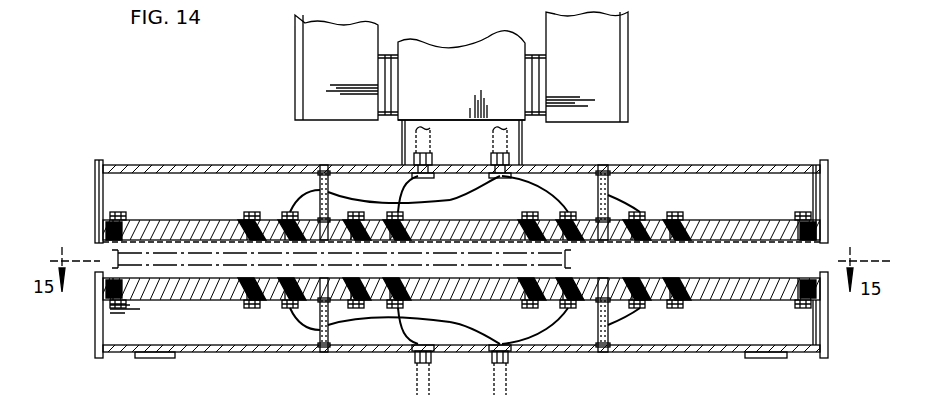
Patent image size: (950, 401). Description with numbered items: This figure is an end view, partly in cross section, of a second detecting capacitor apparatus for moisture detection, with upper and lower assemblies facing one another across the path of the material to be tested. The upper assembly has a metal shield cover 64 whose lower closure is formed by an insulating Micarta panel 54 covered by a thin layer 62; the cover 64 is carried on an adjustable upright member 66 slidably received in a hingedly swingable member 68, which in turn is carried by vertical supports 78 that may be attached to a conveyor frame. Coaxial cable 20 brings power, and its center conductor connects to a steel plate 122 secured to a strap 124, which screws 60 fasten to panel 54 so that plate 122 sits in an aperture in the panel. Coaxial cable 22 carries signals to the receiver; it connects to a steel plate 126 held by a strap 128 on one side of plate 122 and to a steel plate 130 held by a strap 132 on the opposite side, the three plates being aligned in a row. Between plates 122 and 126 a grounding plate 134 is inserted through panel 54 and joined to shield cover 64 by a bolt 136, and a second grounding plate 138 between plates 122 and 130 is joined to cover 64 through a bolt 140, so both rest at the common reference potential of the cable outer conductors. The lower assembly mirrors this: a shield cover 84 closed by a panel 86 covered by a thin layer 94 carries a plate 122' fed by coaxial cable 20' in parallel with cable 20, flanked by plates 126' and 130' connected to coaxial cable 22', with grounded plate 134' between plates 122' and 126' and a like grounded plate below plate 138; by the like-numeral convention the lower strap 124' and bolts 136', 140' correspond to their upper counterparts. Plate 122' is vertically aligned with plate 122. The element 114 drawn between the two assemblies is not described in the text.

The coaxial cable 20 is at (435, 152).
The coaxial cable 22 is at (484, 152).
The coaxial cable 20' is at (446, 370).
The coaxial cable 22' is at (521, 370).
The panel 54 is at (548, 225).
The screws 60 is at (130, 207).
The layer 62 is at (108, 248).
The shield cover 64 is at (674, 164).
The upright member 66 is at (402, 146).
The hingedly swingable member 68 is at (428, 50).
The vertical supports 78 is at (628, 48).
The shield cover 84 is at (712, 354).
The panel 86 is at (645, 290).
The layer 94 is at (726, 278).
The shaft 114 is at (572, 258).
The plate 122 is at (509, 202).
The strap 124 is at (408, 201).
The plate 126 is at (461, 214).
The strap 128 is at (200, 222).
The plate 130 is at (750, 211).
The strap 132 is at (768, 230).
The plate 134 is at (300, 198).
The bolt 136 is at (313, 187).
The grounding plate 138 is at (614, 226).
The bolt 140 is at (594, 188).
The plate 122' is at (545, 318).
The cable 124' is at (399, 326).
The plate 126' is at (156, 318).
The plate 130' is at (750, 269).
The plate 134' is at (283, 321).
The partition 136' is at (328, 333).
The partition 140' is at (610, 333).